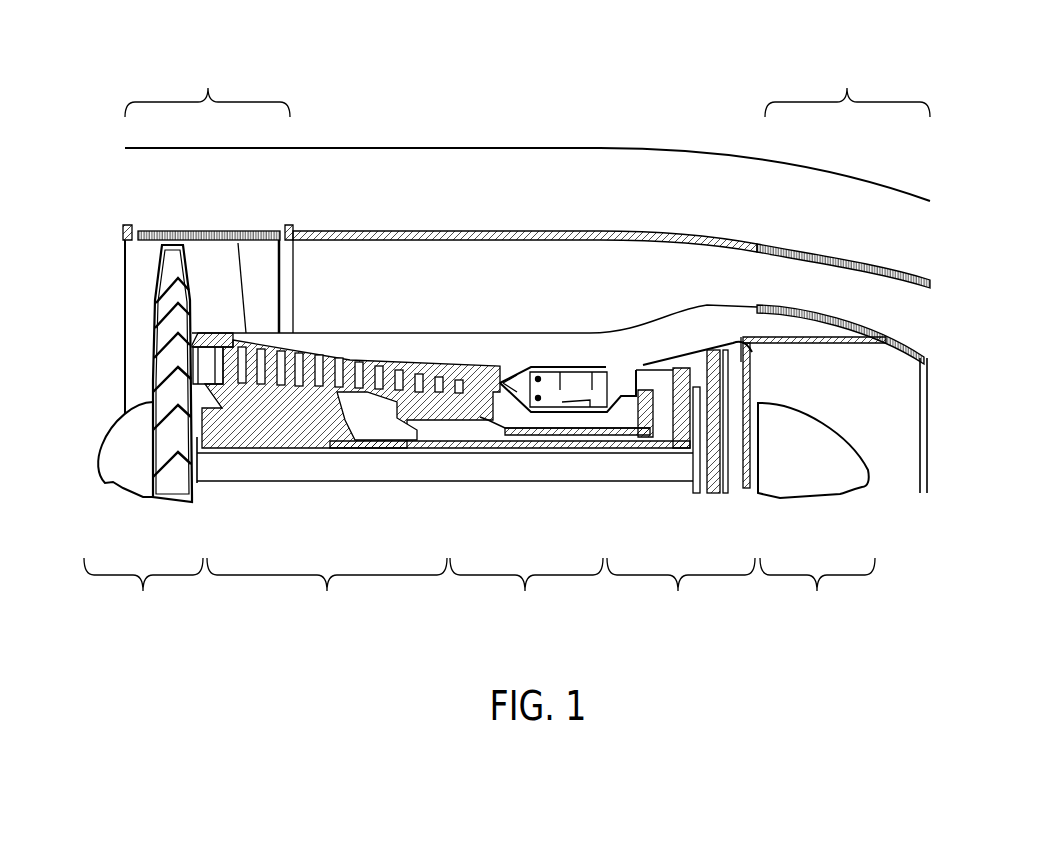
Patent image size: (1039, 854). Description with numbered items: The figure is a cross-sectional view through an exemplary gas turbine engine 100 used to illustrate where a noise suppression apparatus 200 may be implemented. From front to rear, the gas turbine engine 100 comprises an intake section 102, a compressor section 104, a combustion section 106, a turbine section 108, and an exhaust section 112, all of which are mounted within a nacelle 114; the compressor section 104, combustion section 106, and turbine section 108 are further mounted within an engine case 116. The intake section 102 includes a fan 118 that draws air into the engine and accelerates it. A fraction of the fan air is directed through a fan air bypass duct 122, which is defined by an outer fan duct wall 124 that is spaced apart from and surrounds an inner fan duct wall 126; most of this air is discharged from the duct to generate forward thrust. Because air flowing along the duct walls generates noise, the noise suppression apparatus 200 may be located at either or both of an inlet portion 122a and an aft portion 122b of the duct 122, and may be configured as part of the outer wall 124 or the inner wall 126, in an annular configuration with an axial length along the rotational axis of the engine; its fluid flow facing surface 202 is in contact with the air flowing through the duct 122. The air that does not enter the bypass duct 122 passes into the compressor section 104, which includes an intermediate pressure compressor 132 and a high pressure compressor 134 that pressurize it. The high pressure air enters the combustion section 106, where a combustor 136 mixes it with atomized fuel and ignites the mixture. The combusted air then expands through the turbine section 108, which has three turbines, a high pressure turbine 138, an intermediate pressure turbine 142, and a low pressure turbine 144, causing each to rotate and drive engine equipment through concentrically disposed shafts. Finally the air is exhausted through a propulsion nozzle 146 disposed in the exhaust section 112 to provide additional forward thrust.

The gas turbine engine 100 is at (364, 118).
The intake section 102 is at (143, 512).
The compressor section 104 is at (327, 591).
The combustion section 106 is at (526, 591).
The turbine section 108 is at (681, 484).
The exhaust section 112 is at (816, 514).
The nacelle 114 is at (782, 157).
The engine case 116 is at (217, 333).
The fan 118 is at (160, 331).
The fan air bypass duct 122 is at (318, 295).
The inlet portion of duct 122a is at (207, 86).
The aft portion of duct 122b is at (847, 86).
The outer fan duct wall 124 is at (324, 231).
The inner fan duct wall 126 is at (522, 333).
The intermediate pressure compressor 132 is at (290, 425).
The high pressure compressor 134 is at (457, 410).
The combustor 136 is at (574, 362).
The high pressure turbine 138 is at (648, 365).
The intermediate pressure turbine 142 is at (702, 362).
The low pressure turbine 144 is at (743, 361).
The propulsion nozzle 146 is at (907, 417).
The noise suppression apparatus 200 is at (207, 231).
The fluid flow facing surface 202 is at (148, 245).